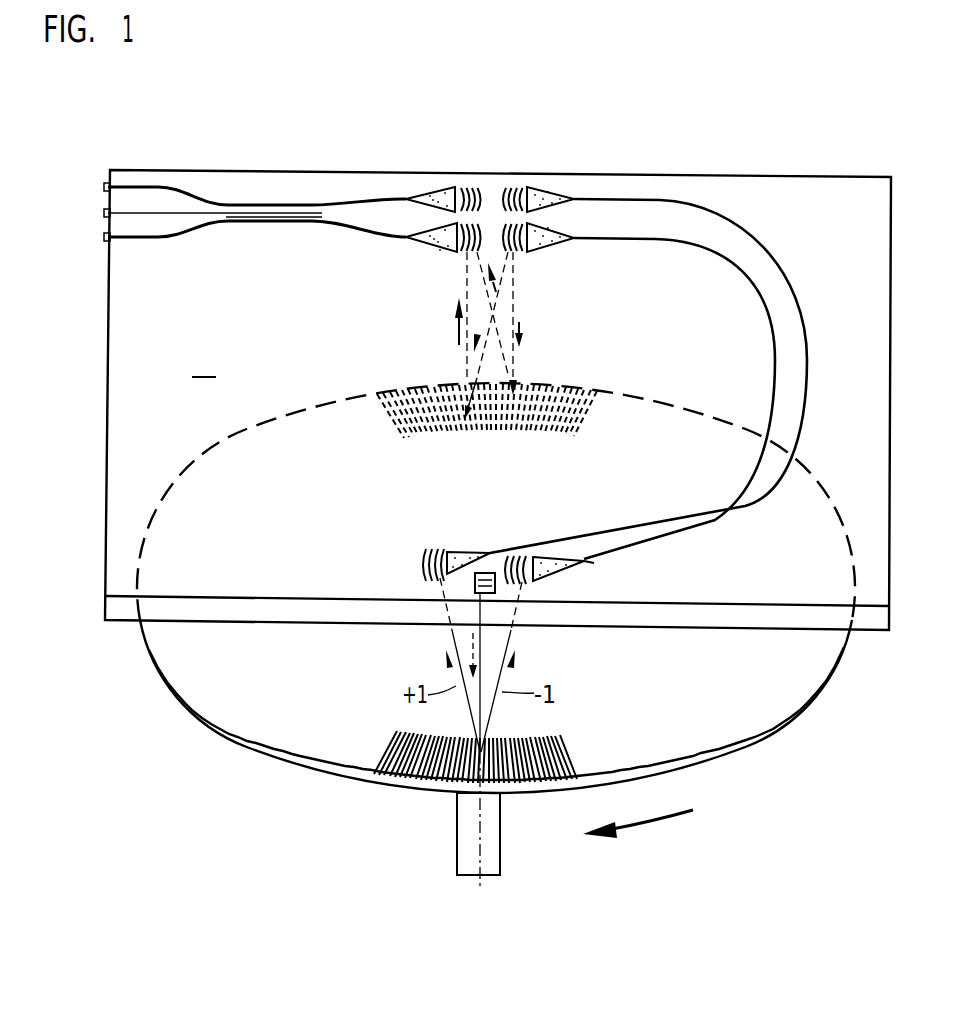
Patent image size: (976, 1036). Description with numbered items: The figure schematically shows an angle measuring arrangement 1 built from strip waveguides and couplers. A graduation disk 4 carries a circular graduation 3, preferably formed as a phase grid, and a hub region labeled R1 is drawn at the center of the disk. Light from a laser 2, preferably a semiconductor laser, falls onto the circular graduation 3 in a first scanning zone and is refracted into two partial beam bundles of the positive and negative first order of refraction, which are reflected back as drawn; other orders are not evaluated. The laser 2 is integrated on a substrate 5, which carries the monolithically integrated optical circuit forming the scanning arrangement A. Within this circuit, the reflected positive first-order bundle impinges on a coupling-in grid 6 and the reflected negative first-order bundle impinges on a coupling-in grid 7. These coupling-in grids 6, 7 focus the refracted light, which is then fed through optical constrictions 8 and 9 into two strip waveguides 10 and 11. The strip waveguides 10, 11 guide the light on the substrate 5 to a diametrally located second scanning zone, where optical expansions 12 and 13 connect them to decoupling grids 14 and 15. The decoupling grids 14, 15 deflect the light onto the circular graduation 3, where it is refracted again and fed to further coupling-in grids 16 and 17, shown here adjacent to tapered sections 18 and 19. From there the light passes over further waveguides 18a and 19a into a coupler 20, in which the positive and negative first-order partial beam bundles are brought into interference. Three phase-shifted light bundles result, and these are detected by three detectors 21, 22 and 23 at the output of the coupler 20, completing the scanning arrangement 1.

The angle measuring arrangement 1 is at (137, 648).
The laser 2 is at (475, 582).
The circular graduation 3 is at (392, 760).
The graduation disk 4 is at (570, 673).
The substrate 5 is at (766, 620).
The coupling-in grid 6 is at (423, 562).
The coupling-in grid 7 is at (540, 586).
The optical constriction 8 is at (462, 552).
The optical constriction 9 is at (586, 562).
The strip waveguide 10 is at (527, 557).
The strip waveguide 11 is at (718, 527).
The optical expansion 12 is at (552, 238).
The optical expansion 13 is at (543, 197).
The decoupling grid 14 is at (518, 252).
The decoupling grid 15 is at (520, 187).
The coupling-in grid 16 is at (458, 257).
The coupling-in grid 17 is at (458, 187).
The tapered waveguide 18 is at (427, 240).
The waveguide 18a is at (353, 228).
The tapered waveguide 19 is at (433, 193).
The waveguide 19a is at (362, 197).
The coupler 20 is at (288, 205).
The detector 21 is at (108, 187).
The detector 22 is at (107, 212).
The detector 23 is at (107, 238).
The hub / shaft R1 is at (478, 857).
The scanning arrangement A is at (204, 362).